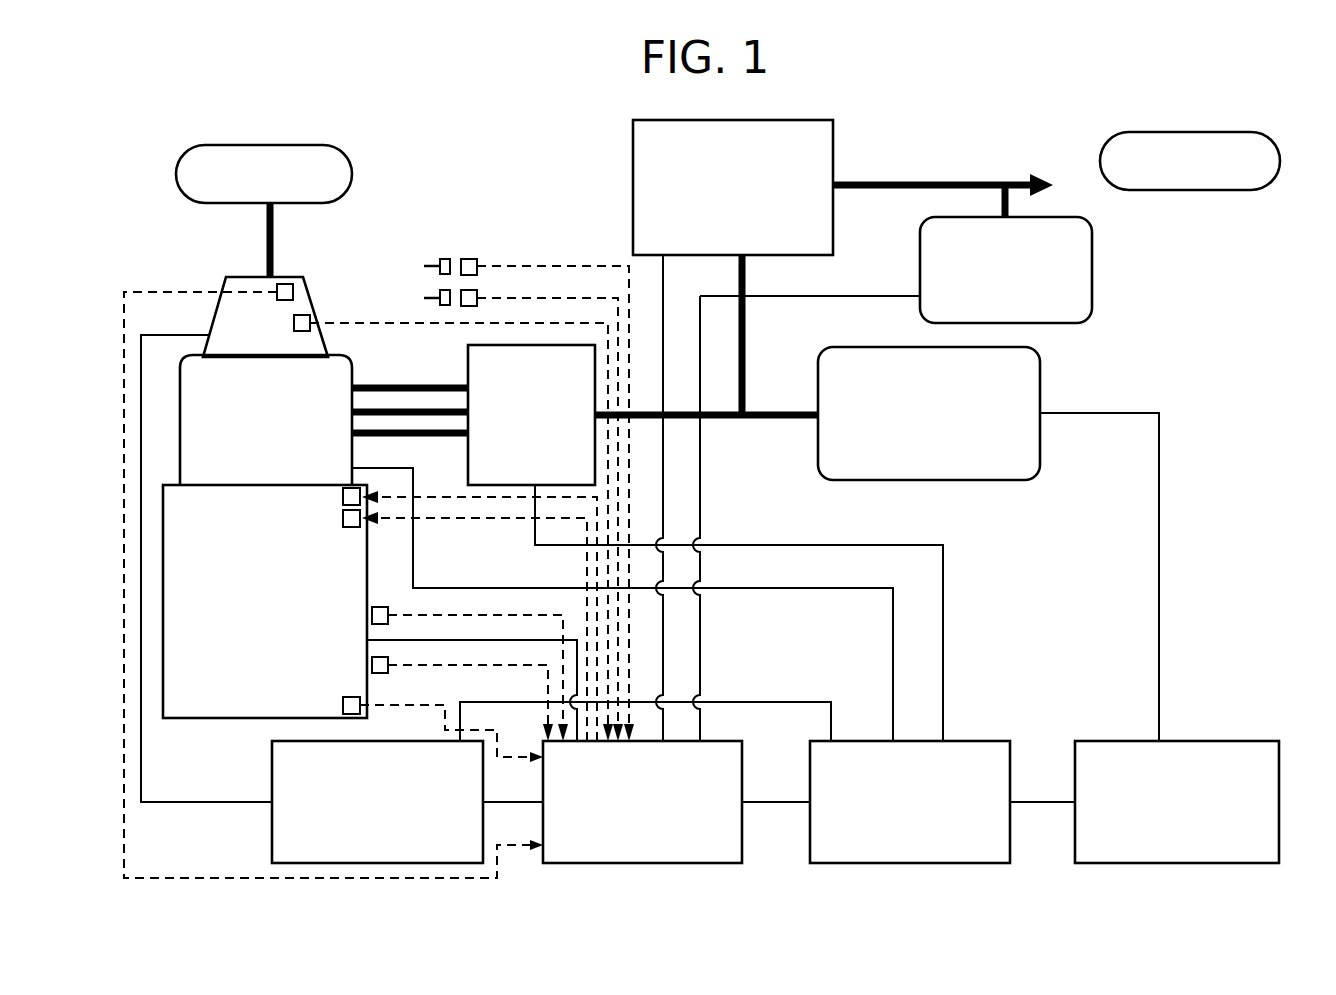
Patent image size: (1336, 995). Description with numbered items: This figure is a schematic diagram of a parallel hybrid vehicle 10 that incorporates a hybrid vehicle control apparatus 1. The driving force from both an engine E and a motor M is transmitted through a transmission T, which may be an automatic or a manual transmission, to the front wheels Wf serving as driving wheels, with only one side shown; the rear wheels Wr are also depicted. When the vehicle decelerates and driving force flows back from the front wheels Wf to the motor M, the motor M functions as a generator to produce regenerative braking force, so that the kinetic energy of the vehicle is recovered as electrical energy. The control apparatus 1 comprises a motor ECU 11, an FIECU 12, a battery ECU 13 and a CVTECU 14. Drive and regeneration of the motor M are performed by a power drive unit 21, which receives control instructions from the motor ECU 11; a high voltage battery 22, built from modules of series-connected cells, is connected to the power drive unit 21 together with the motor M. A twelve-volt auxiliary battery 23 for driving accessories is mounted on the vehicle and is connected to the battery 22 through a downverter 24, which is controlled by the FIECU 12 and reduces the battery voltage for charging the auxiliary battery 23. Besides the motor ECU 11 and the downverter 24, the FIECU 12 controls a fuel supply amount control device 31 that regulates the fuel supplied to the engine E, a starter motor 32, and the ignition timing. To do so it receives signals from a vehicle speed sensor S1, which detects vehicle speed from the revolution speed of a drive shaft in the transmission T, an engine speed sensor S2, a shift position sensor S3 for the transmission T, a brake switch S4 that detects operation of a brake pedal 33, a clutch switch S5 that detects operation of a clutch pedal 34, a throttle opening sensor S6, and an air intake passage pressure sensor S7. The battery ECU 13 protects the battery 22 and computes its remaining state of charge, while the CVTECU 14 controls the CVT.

The hybrid vehicle control apparatus 1 is at (757, 884).
The hybrid vehicle 10 is at (1280, 378).
The motor ECU 11 is at (926, 815).
The FIECU 12 is at (659, 815).
The battery ECU 13 is at (1193, 815).
The CVTECU 14 is at (393, 815).
The power drive unit 21 is at (547, 428).
The battery 22 is at (945, 426).
The auxiliary battery 23 is at (1021, 282).
The downverter 24 is at (749, 199).
The fuel supply amount control device 31 is at (343, 496).
The starter motor 32 is at (343, 518).
The brake pedal 33 is at (440, 260).
The clutch pedal 34 is at (440, 291).
The vehicle speed sensor S1 is at (286, 283).
The engine speed sensor S2 is at (344, 701).
The shift position sensor S3 is at (306, 314).
The brake switch S4 is at (477, 262).
The clutch switch S5 is at (477, 293).
The throttle opening sensor S6 is at (388, 672).
The air intake passage pressure sensor S7 is at (380, 606).
The engine E is at (275, 603).
The motor M is at (277, 425).
The transmission T is at (273, 348).
The front wheels Wf is at (352, 170).
The rear wheels Wr is at (1243, 190).